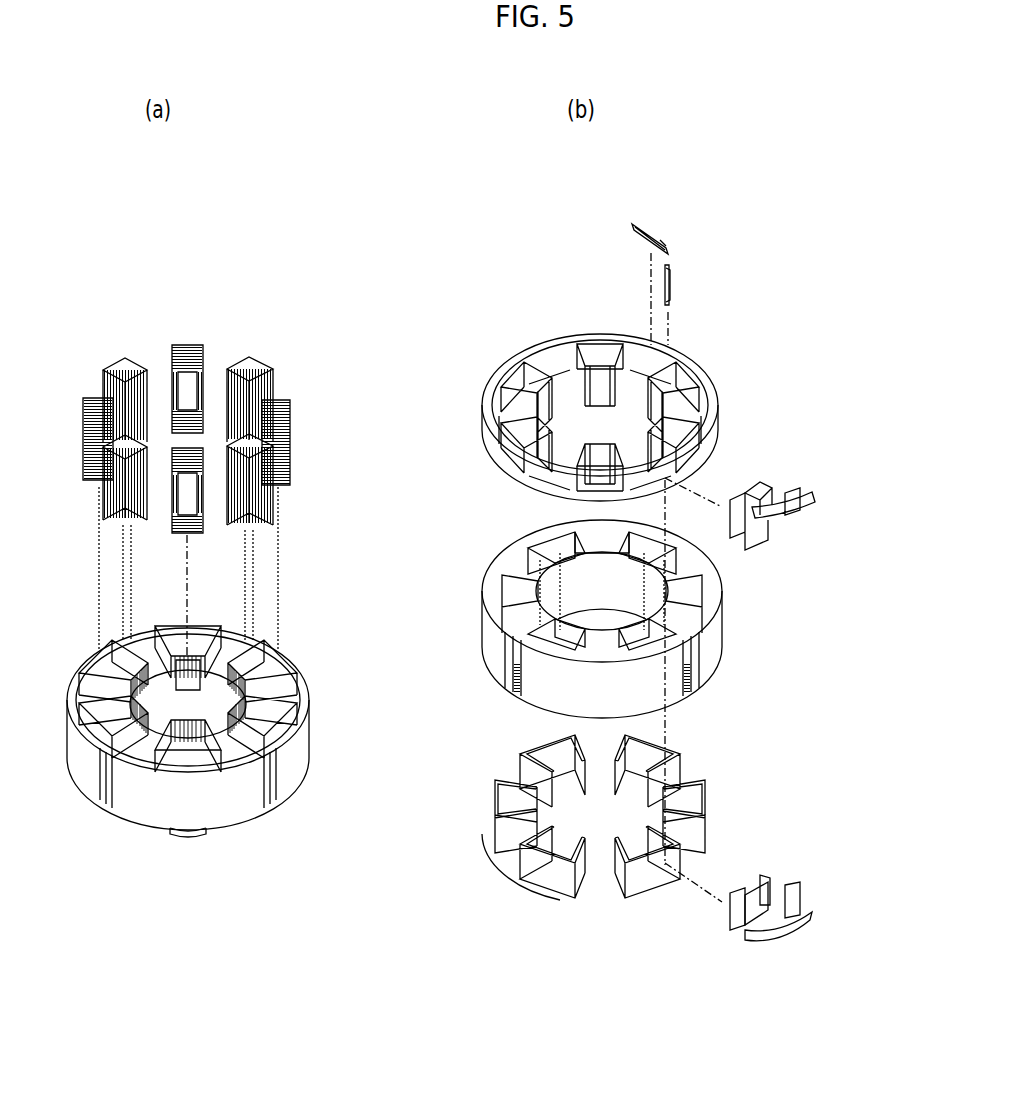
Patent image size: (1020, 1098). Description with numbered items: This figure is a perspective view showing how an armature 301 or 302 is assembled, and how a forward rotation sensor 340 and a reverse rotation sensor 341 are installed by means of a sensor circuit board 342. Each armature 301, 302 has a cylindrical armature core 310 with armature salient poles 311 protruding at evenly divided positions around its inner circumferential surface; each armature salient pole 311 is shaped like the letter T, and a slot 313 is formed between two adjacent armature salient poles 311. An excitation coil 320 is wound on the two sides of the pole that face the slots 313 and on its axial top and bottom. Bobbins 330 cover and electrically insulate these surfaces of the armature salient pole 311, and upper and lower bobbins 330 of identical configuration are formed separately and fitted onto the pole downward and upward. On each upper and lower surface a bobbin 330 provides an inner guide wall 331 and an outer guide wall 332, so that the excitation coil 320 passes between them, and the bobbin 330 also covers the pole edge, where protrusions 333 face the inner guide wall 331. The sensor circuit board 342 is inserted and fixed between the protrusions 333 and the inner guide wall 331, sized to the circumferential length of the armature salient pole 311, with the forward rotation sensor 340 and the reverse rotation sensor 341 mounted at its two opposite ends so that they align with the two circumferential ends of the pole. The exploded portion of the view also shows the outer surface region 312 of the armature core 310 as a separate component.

The armature 301 is at (160, 308).
The armature 302 is at (438, 308).
The armature core 310 is at (311, 744).
The armature salient pole 311 is at (178, 675).
The outer surface groove of core 312 is at (275, 807).
The slot 313 is at (697, 604).
The excitation coil 320 is at (293, 413).
The bobbin 330 is at (307, 714).
The inner guide wall 331 is at (750, 490).
The outer guide wall 332 is at (785, 497).
The protrusion 333 is at (735, 500).
The forward rotation sensor 340 is at (630, 232).
The reverse rotation sensor 341 is at (658, 253).
The sensor circuit board 342 is at (660, 243).